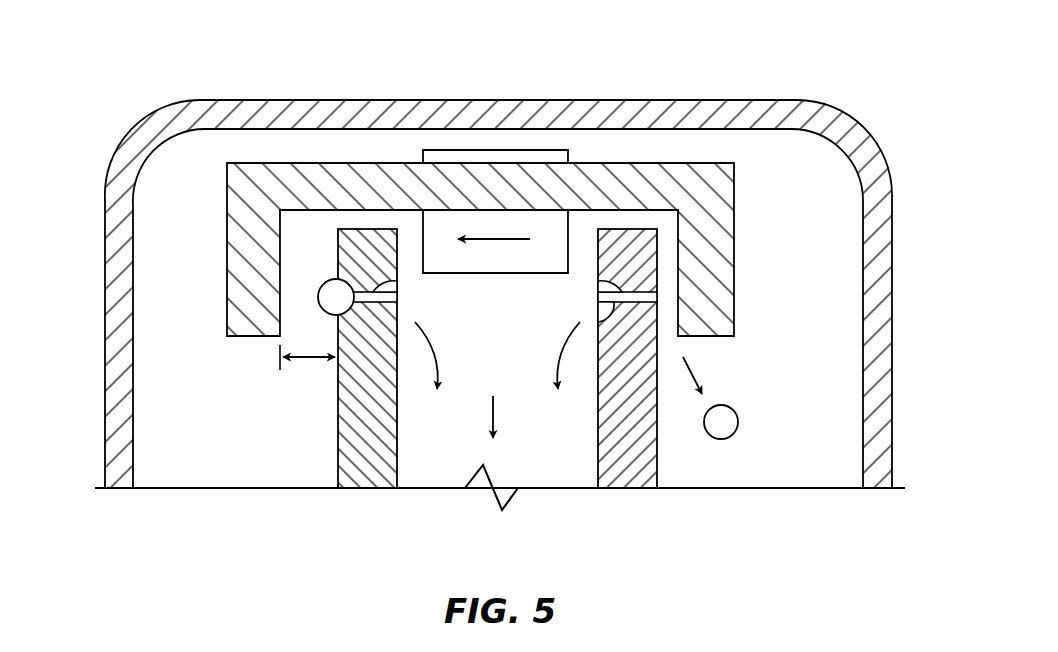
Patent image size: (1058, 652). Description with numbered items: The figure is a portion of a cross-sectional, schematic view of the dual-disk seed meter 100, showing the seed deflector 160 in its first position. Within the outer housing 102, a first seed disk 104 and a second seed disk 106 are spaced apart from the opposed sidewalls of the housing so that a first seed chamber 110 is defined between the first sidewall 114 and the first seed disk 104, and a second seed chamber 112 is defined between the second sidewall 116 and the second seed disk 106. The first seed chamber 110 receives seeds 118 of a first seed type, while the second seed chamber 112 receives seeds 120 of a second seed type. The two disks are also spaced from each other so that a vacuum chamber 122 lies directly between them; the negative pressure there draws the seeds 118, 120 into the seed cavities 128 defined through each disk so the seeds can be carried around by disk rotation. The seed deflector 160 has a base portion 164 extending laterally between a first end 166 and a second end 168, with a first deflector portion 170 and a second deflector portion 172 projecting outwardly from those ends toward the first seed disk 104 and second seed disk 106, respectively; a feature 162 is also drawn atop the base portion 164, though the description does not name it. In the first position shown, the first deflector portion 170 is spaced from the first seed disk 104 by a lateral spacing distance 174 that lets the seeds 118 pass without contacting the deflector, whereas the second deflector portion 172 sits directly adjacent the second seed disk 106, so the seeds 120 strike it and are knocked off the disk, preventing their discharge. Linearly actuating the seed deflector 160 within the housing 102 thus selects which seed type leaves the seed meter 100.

The seed meter 100 is at (98, 100).
The outer housing 102 is at (857, 116).
The first seed disk 104 is at (335, 450).
The second seed disk 106 is at (660, 450).
The first seed chamber 110 is at (177, 449).
The second seed chamber 112 is at (792, 449).
The first sidewall 114 is at (114, 368).
The second sidewall 116 is at (888, 375).
The seeds of a first seed type 118 is at (328, 284).
The seeds of a second seed type 120 is at (722, 422).
The vacuum chamber 122 is at (473, 380).
The seed cavities 128 is at (388, 284).
The seed deflector 160 is at (327, 158).
The protrusion 162 is at (498, 150).
The base portion 164 is at (580, 182).
The first end 166 is at (227, 190).
The second end 168 is at (734, 188).
The first deflector portion 170 is at (250, 338).
The second deflector portion 172 is at (734, 300).
The lateral spacing distance 174 is at (300, 357).